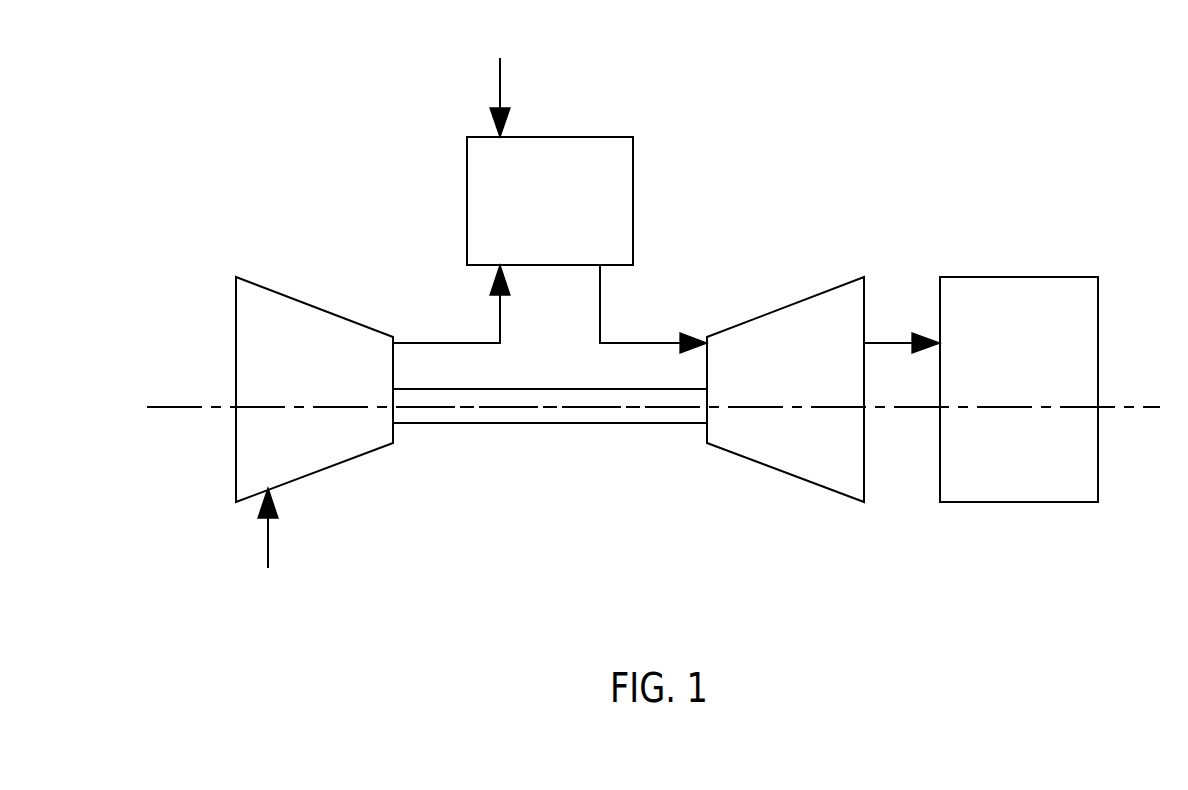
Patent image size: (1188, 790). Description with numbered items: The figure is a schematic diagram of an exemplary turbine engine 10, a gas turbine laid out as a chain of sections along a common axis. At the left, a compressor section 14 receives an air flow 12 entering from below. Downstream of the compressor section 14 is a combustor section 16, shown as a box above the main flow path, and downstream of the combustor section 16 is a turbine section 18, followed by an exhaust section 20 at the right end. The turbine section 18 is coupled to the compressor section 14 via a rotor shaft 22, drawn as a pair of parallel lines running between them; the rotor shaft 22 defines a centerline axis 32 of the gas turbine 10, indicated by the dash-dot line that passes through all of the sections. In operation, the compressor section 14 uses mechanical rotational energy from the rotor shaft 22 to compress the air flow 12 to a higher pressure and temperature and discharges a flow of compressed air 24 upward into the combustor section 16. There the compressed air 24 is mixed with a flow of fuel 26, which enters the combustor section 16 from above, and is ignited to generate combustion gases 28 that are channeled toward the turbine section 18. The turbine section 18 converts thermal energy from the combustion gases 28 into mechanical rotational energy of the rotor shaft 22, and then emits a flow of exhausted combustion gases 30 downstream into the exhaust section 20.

The turbine engine 10 is at (262, 160).
The air flow 12 is at (268, 547).
The compressor section 14 is at (321, 371).
The combustor section 16 is at (556, 217).
The turbine section 18 is at (797, 371).
The exhaust section 20 is at (1030, 371).
The rotor shaft 22 is at (503, 424).
The flow of compressed air 24 is at (432, 342).
The flow of fuel 26 is at (500, 78).
The combustion gases 28 is at (660, 342).
The flow of exhausted combustion gases 30 is at (892, 342).
The centerline axis 32 is at (597, 408).